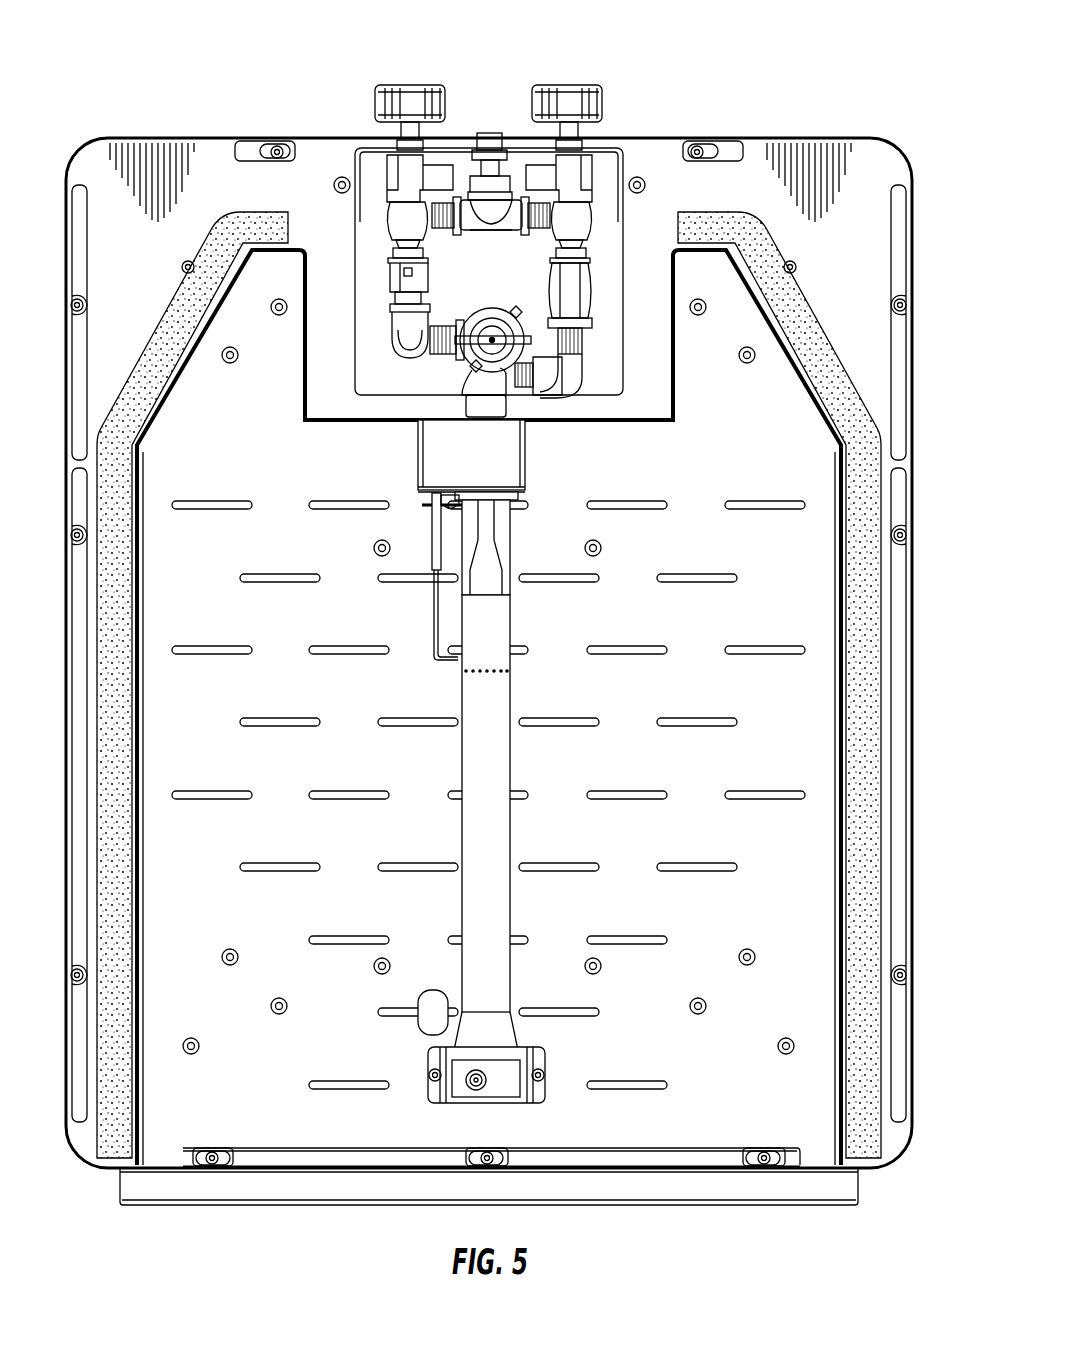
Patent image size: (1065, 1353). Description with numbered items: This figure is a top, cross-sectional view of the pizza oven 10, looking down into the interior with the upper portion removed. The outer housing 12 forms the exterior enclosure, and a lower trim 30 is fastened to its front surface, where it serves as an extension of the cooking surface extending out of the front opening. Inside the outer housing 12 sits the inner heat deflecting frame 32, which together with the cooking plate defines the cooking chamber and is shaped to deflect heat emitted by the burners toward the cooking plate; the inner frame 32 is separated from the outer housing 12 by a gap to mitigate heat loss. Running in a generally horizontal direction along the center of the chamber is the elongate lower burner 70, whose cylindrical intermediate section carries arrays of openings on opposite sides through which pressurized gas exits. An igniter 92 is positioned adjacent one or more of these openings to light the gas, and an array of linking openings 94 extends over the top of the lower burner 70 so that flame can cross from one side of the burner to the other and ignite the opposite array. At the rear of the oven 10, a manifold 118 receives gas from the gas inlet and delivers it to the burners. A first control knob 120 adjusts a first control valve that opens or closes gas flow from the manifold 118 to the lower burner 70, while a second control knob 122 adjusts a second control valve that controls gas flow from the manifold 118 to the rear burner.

The pizza oven 10 is at (130, 54).
The outer housing 12 is at (916, 354).
The lower trim 30 is at (752, 1192).
The inner heat deflecting frame 32 is at (856, 780).
The lower burner 70 is at (518, 850).
The igniter 92 is at (438, 652).
The linking openings 94 is at (504, 673).
The manifold 118 is at (477, 236).
The first control knob 120 is at (580, 84).
The second control knob 122 is at (398, 84).